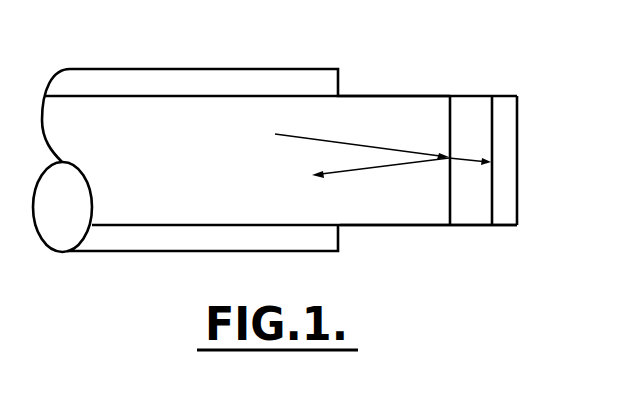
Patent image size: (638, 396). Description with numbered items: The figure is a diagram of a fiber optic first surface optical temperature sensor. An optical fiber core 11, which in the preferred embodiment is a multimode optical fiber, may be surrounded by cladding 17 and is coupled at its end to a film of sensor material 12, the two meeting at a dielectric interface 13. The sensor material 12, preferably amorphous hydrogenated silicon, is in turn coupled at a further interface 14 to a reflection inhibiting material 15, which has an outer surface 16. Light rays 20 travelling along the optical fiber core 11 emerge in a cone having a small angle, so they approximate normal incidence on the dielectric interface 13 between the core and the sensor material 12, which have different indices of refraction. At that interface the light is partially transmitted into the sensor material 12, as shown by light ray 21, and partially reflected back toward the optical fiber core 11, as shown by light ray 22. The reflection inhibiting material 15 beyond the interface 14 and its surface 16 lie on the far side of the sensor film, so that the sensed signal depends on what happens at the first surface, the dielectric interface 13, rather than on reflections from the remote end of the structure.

The optical fiber core 11 is at (408, 215).
The sensor material 12 is at (462, 106).
The dielectric interface 13 is at (445, 157).
The interface 14 is at (494, 97).
The reflection inhibiting material 15 is at (511, 97).
The surface 16 is at (518, 134).
The cladding 17 is at (292, 68).
The light rays 20 is at (345, 143).
The light ray 21 is at (469, 162).
The light ray 22 is at (397, 167).